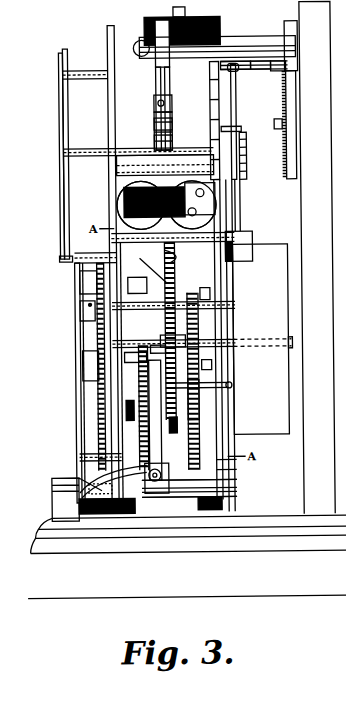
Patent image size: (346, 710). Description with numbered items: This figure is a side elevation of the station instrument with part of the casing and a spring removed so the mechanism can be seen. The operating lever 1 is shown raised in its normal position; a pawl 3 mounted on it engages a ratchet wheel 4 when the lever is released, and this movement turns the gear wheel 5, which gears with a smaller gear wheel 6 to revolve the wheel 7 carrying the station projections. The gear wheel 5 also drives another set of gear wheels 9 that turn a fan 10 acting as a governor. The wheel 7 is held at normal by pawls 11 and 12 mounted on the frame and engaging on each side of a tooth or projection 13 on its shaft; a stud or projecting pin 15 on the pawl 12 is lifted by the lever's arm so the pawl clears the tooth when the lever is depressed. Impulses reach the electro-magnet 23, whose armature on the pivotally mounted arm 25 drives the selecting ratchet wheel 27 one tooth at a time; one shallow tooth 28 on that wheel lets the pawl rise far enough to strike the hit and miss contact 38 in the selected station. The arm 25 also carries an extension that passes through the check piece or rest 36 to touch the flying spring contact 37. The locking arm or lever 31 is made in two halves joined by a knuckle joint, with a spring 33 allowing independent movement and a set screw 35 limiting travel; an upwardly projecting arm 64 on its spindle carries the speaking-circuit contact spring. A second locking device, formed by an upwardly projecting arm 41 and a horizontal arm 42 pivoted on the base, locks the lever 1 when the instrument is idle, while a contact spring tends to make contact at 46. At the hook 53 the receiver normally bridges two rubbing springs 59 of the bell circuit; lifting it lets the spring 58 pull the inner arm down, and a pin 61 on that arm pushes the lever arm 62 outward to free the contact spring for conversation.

The hit and miss contact 38 is at (158, 81).
The check piece or rest 36 is at (172, 81).
The hook 53 is at (212, 94).
The flying spring contact 37 is at (174, 105).
The selecting ratchet wheel 27 is at (156, 127).
The pivotally mounted arm 25 is at (174, 126).
The locking arm or lever 31 is at (174, 141).
The lever arm 62 is at (238, 113).
The pin 61 is at (255, 72).
The spring 33 is at (265, 72).
The set screw 35 is at (280, 72).
The rubbing springs 59 is at (248, 142).
The spring 58 is at (276, 125).
The shallow tooth 28 is at (333, 146).
The electro-magnet 23 is at (166, 205).
The upwardly projecting arm 64 is at (243, 193).
The gear wheels 9 is at (204, 288).
The lever 1 is at (165, 293).
The fan 10 is at (259, 339).
The pawl 3 is at (172, 340).
The stud or projecting pin 15 is at (158, 348).
The gear wheel 5 is at (198, 330).
The pawl 12 is at (133, 360).
The smaller gear wheel 6 is at (209, 365).
The ratchet wheel 4 is at (198, 405).
The pawl 11 is at (141, 420).
The upwardly projecting arm 41 is at (150, 447).
The horizontal arm 42 is at (113, 481).
The tooth or projection 13 is at (157, 479).
The contact 46 is at (77, 500).
The wheel 7 is at (97, 300).